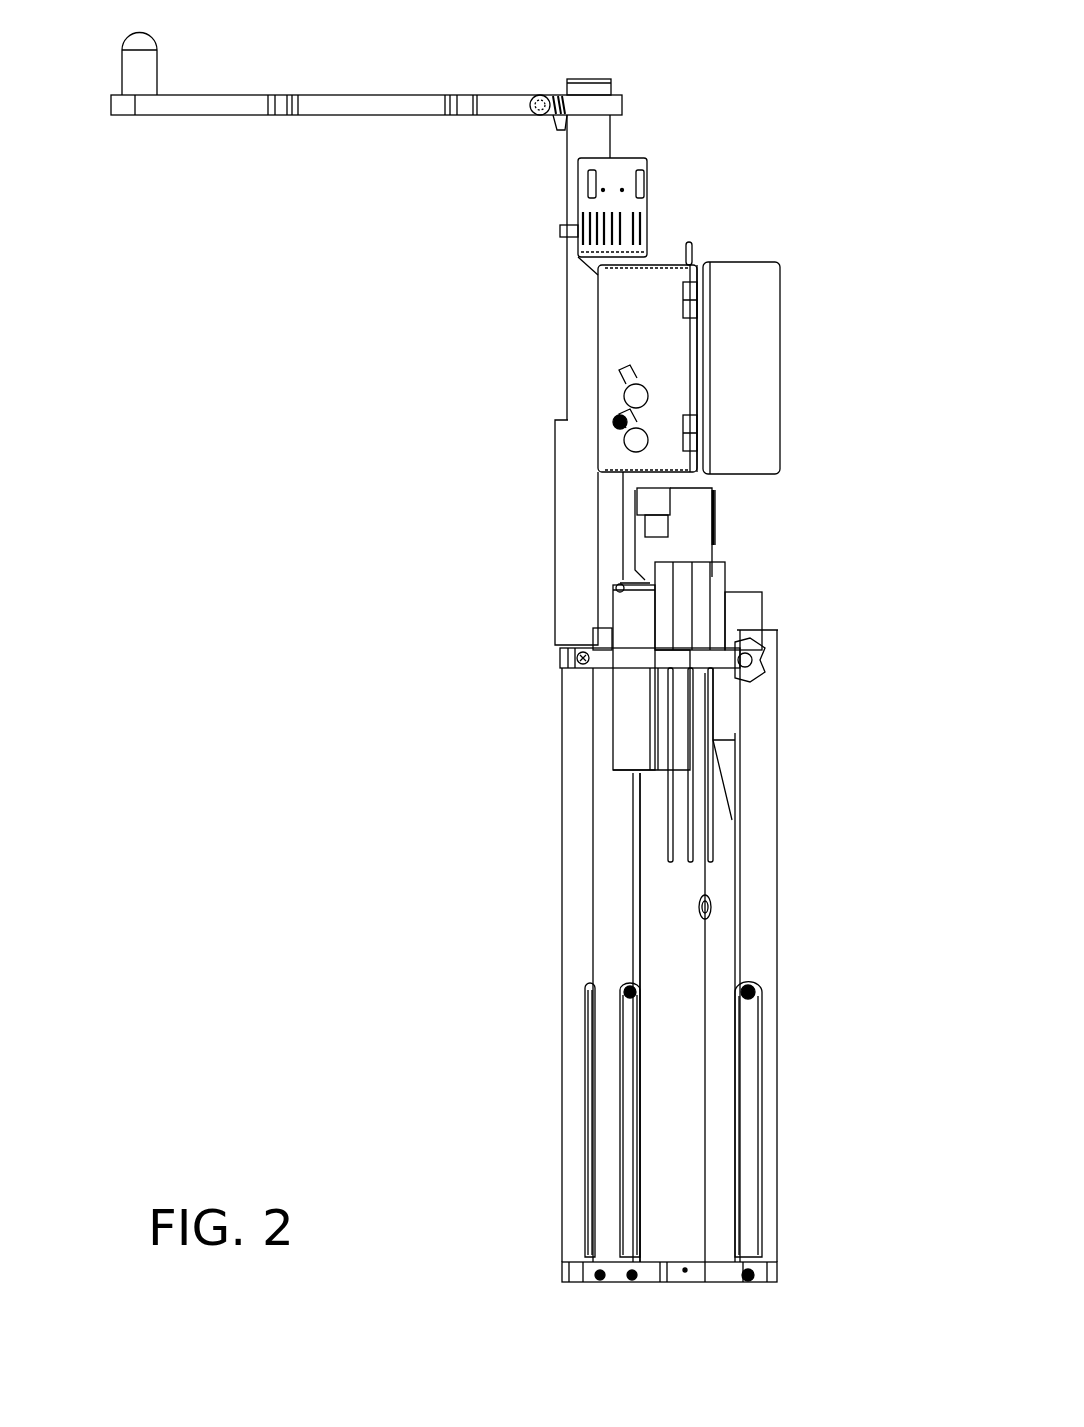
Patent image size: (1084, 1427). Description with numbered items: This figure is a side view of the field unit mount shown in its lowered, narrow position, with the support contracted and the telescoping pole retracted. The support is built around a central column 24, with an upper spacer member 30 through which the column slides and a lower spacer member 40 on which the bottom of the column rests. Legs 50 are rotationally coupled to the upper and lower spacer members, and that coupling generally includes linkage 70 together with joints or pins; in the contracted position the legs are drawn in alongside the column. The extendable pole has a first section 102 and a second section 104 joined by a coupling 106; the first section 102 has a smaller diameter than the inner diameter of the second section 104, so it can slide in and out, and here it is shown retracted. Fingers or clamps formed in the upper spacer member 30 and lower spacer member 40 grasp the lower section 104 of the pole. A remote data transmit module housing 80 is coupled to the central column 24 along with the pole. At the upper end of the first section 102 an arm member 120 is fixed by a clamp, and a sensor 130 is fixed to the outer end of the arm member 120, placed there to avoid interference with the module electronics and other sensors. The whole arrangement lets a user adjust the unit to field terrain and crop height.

The arm member 120 is at (362, 108).
The sensor 130 is at (147, 72).
The first section 102 is at (604, 137).
The remote data transmit module housing 80 is at (762, 332).
The coupling 106 is at (573, 532).
The upper spacer member 30 is at (620, 660).
The second section 104 is at (573, 944).
The legs 50 is at (760, 818).
The linkage 70 is at (750, 1043).
The central column 24 is at (683, 1117).
The lower spacer member 40 is at (694, 1276).